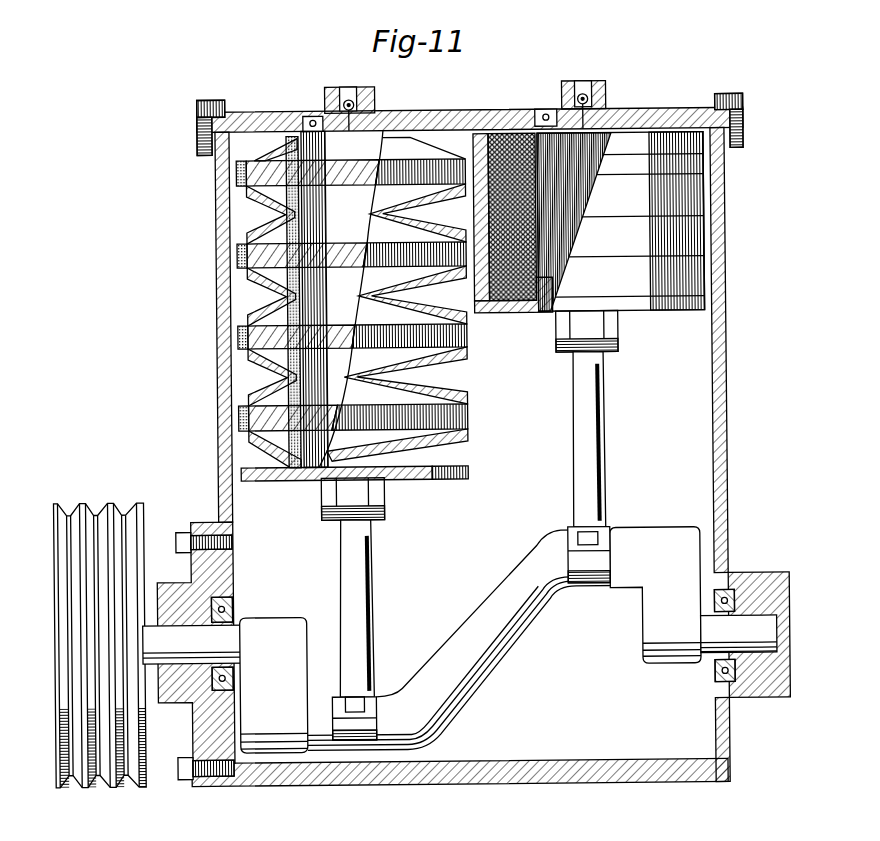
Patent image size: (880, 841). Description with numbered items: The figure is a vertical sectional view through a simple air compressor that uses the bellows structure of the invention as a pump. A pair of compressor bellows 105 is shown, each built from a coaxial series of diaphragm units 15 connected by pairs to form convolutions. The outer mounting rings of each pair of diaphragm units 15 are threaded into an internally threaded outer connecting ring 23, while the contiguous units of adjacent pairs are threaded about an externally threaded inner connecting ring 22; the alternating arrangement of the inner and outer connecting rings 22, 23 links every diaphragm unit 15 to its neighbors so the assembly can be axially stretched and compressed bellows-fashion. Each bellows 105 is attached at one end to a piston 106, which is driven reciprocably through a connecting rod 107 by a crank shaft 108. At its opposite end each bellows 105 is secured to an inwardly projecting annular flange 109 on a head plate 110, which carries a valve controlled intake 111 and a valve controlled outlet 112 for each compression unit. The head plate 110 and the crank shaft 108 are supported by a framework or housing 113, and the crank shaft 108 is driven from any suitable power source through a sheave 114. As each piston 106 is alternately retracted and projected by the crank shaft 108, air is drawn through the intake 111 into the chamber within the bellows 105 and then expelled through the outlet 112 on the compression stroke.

The diaphragm unit 15 is at (273, 323).
The inner connecting ring 22 is at (366, 233).
The outer connecting ring 23 is at (247, 203).
The compressor bellows 105 is at (500, 275).
The piston 106 is at (310, 468).
The connecting rod 107 is at (369, 586).
The crank shaft 108 is at (482, 585).
The annular flange 109 is at (298, 152).
The head plate 110 is at (447, 118).
The valve controlled intake 111 is at (315, 114).
The valve controlled outlet 112 is at (354, 90).
The housing 113 is at (720, 358).
The sheave 114 is at (112, 503).